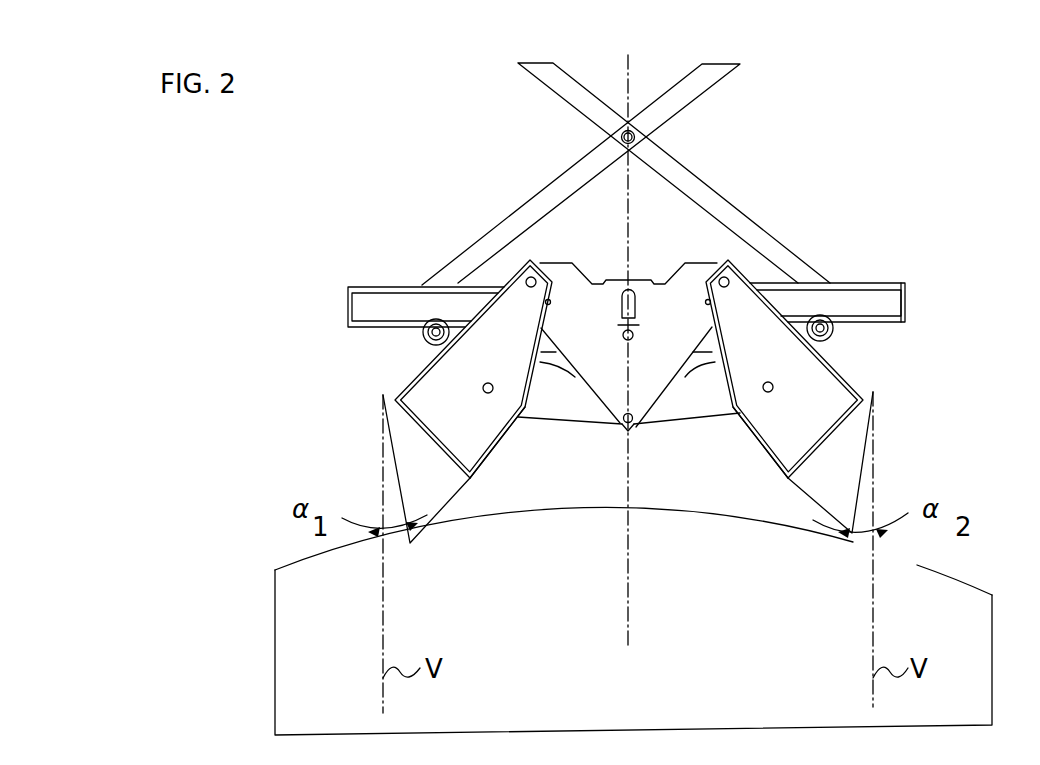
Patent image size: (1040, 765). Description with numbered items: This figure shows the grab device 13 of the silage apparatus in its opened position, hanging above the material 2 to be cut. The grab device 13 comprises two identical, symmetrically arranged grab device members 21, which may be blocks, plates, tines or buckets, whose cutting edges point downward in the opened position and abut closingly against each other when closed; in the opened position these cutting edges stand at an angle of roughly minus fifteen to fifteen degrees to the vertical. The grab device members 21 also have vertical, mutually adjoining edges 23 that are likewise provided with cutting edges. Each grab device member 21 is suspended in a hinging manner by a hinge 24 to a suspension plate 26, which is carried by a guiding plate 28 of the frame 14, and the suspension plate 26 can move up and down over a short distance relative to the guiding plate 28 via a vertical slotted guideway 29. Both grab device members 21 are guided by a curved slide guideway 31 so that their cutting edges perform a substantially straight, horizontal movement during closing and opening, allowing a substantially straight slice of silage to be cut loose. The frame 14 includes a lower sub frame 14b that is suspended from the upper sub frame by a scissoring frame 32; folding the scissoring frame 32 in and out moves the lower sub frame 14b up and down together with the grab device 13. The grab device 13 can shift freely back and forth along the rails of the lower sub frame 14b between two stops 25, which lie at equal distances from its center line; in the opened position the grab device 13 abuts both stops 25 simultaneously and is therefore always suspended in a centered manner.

The tire / contact surface 2 is at (948, 607).
The grab device 13 is at (835, 397).
The frame 14 is at (898, 287).
The lower sub frame 14b is at (890, 311).
The grab device member 21 is at (410, 474).
The mutually adjoining edge 23 is at (454, 502).
The hinge 24 is at (528, 268).
The stop 25 is at (435, 322).
The suspension plate 26 is at (650, 302).
The guiding plate 28 is at (700, 402).
The vertical slotted guideway 29 is at (626, 421).
The curved slide guideway 31 is at (705, 357).
The scissoring frame 32 is at (692, 178).